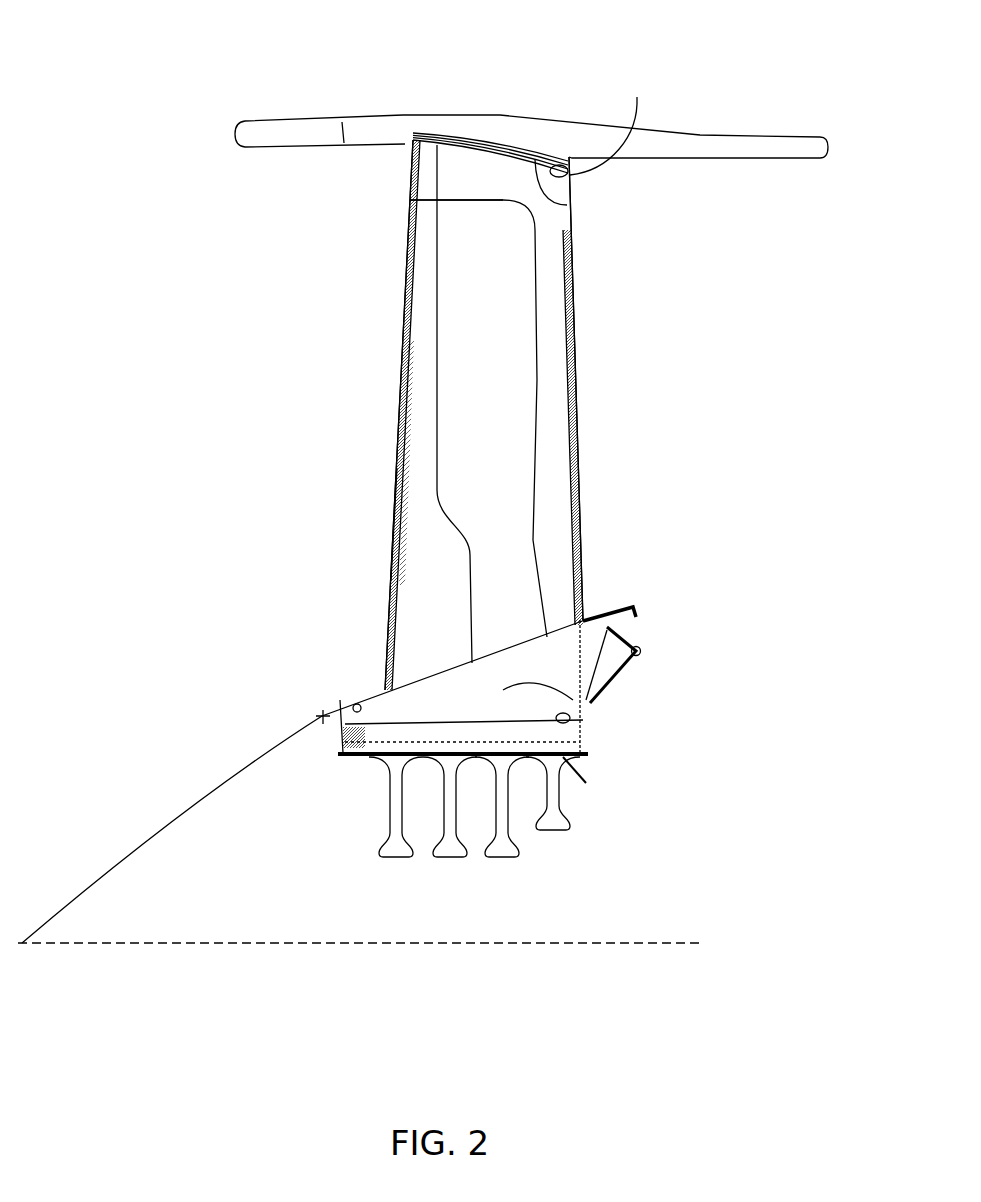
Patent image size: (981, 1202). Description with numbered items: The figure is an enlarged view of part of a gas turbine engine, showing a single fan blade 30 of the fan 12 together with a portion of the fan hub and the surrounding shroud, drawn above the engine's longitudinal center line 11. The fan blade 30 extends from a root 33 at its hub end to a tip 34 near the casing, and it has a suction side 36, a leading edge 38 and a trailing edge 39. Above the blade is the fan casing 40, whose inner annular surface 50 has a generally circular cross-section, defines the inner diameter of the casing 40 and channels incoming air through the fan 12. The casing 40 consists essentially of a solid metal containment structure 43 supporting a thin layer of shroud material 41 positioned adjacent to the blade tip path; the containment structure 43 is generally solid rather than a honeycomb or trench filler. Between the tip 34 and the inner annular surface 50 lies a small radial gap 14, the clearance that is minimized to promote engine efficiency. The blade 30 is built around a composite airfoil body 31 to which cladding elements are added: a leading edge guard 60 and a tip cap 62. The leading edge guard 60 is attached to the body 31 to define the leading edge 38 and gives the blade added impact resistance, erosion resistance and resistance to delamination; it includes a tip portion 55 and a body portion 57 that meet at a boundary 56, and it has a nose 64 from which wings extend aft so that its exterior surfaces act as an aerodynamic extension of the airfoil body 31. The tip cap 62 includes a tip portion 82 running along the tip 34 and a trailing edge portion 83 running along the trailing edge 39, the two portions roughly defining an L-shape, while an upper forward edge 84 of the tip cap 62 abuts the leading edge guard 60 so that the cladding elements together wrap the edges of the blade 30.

The longitudinal center line 11 is at (252, 943).
The fan 12 is at (184, 749).
The radial gap 14 is at (398, 128).
The fan blade 30 is at (278, 441).
The airfoil body 31 is at (412, 598).
The root 33 is at (572, 716).
The tip 34 is at (575, 204).
The suction side 36 is at (400, 392).
The leading edge 38 is at (403, 297).
The trailing edge 39 is at (573, 400).
The fan casing 40 is at (453, 80).
The shroud material 41 is at (500, 143).
The containment structure 43 is at (490, 123).
The inner annular surface 50 is at (609, 121).
The tip portion 55 is at (412, 178).
The boundary 56 is at (410, 200).
The body portion 57 is at (410, 269).
The leading edge guard 60 is at (292, 238).
The tip cap 62 is at (597, 306).
The nose 64 is at (397, 468).
The tip portion 82 is at (502, 185).
The trailing edge portion 83 is at (543, 322).
The upper forward edge 84 is at (440, 178).